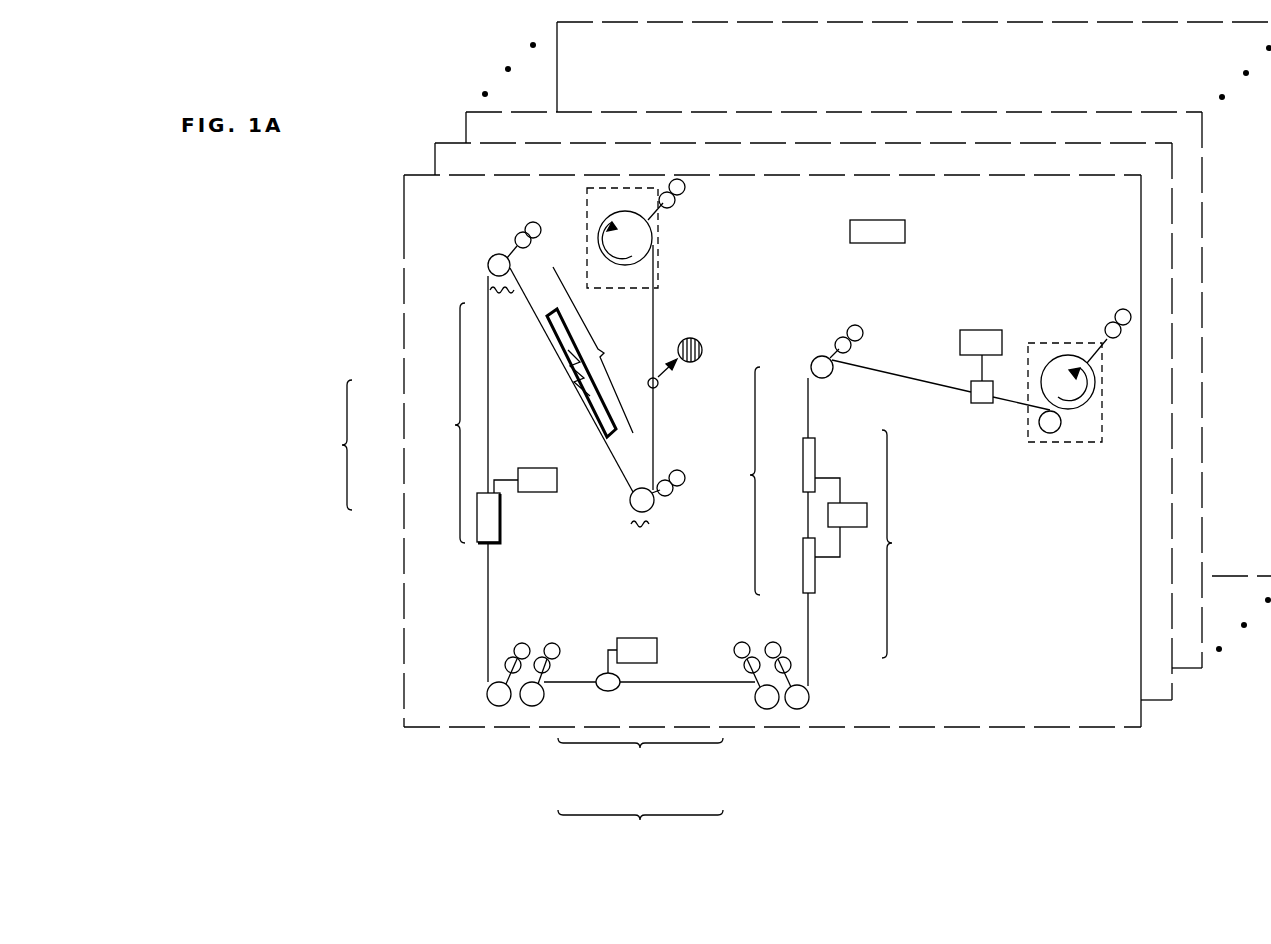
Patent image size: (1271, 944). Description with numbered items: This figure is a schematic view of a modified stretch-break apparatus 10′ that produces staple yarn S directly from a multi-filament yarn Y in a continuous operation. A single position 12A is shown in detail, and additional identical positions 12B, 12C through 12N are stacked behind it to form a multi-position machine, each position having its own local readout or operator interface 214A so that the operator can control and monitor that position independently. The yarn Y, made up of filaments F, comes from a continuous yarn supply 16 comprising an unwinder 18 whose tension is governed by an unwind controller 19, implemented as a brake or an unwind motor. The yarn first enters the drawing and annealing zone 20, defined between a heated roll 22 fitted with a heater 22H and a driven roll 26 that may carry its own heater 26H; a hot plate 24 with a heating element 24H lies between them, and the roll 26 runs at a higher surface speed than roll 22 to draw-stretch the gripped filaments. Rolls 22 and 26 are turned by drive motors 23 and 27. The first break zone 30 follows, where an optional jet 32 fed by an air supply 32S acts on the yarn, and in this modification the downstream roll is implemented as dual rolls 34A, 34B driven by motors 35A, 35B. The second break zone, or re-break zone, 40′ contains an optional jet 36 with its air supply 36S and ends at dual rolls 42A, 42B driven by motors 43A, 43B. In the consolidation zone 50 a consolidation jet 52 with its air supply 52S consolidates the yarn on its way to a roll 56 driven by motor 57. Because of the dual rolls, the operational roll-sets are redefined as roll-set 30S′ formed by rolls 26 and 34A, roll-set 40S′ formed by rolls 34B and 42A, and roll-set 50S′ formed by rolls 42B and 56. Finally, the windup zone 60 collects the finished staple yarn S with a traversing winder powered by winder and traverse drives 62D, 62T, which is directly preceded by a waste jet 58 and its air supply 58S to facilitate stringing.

The imaging apparatus 10′ is at (866, 780).
The position 12A is at (404, 175).
The stretch-break position 12B is at (435, 143).
The stretch-break position 12C is at (466, 112).
The stretch-break position 12N is at (557, 22).
The continuous supply of yarn 16 is at (656, 264).
The unwinder 18 is at (606, 215).
The unwind controller 19 is at (676, 196).
The drawing and annealing zone 20 is at (593, 350).
The roll 22 is at (630, 510).
The heater 22H is at (640, 527).
The drive motor 23 is at (674, 493).
The hot plate 24 is at (569, 368).
The heating element 24H is at (582, 396).
The driven roll 26 is at (488, 268).
The heater 26H is at (500, 297).
The drive motor 27 is at (522, 232).
The first break zone 30 is at (458, 479).
The operational roll-set 30S′ is at (324, 445).
The jet 32 is at (500, 531).
The air supply 32S is at (526, 480).
The roll 34A is at (499, 706).
The roll 34B is at (532, 706).
The drive motor 35A is at (533, 615).
The drive motor 35B is at (553, 645).
The jet 36 is at (610, 691).
The air supply 36S is at (632, 655).
The web span 40′ is at (649, 731).
The operational roll-set 40S′ is at (640, 831).
The roll 42A is at (767, 709).
The roll 42B is at (797, 709).
The drive motor 43A is at (742, 642).
The drive motor 43B is at (773, 642).
The consolidation zone 50 is at (766, 526).
The operational roll-set 50S′ is at (910, 544).
The consolidation jet 52 is at (802, 483).
The air supply 52S is at (841, 517).
The roll 56 is at (830, 376).
The drive motor 57 is at (846, 337).
The waste jet 58 is at (980, 404).
The enabling-air supply 58S is at (981, 355).
The windup zone 60 is at (1056, 344).
The winder drive 62D is at (1116, 315).
The traverse drive 62T is at (1052, 433).
The local readout/operator interface 214A is at (877, 232).
The filaments F is at (704, 350).
The staple yarn S is at (920, 373).
The yarn Y is at (658, 389).